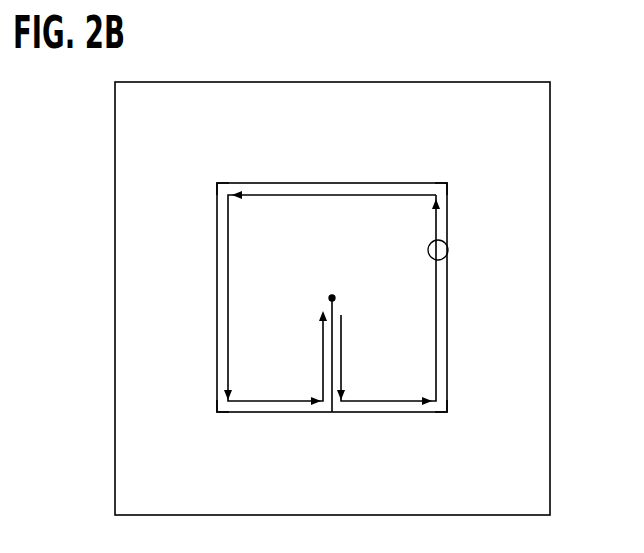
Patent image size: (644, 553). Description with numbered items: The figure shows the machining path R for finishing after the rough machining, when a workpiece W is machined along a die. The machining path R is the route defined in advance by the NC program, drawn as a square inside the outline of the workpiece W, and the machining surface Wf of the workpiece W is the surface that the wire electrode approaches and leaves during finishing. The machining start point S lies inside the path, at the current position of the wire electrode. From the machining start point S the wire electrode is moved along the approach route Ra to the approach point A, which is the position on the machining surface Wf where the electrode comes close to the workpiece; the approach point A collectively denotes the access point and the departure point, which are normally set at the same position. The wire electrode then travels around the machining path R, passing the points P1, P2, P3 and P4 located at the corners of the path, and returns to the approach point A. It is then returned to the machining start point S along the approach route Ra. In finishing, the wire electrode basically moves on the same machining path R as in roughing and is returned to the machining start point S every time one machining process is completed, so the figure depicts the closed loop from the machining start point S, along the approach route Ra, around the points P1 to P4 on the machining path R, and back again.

The workpiece W is at (536, 131).
The machining surface Wf is at (441, 242).
The machining path R is at (452, 318).
The approach route Ra is at (333, 352).
The machining start point S is at (335, 297).
The approach point A is at (332, 412).
The point P1 is at (447, 412).
The point P2 is at (447, 183).
The point P3 is at (216, 183).
The point P4 is at (217, 412).